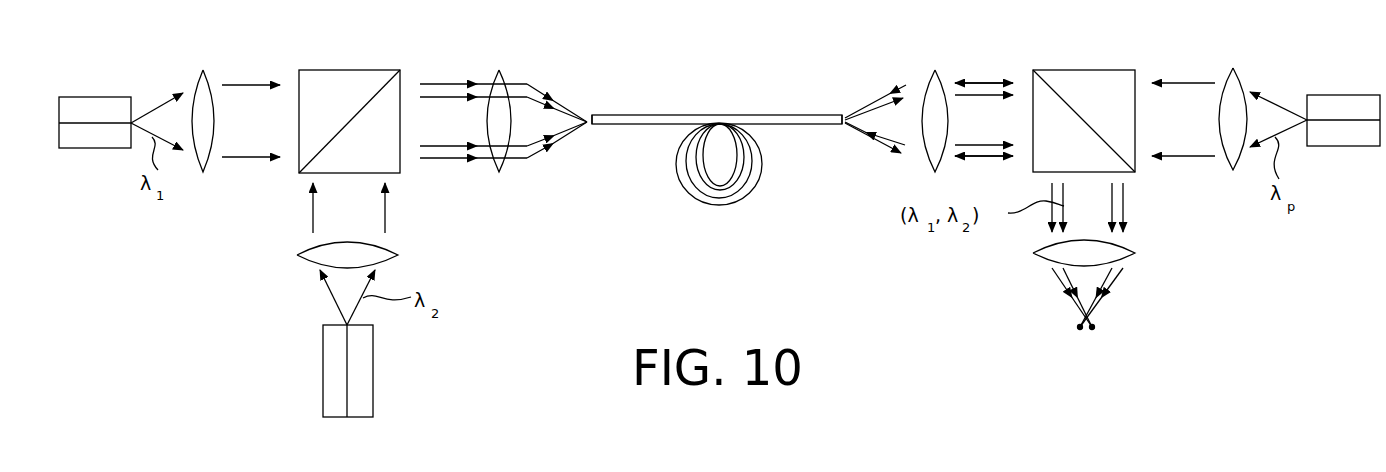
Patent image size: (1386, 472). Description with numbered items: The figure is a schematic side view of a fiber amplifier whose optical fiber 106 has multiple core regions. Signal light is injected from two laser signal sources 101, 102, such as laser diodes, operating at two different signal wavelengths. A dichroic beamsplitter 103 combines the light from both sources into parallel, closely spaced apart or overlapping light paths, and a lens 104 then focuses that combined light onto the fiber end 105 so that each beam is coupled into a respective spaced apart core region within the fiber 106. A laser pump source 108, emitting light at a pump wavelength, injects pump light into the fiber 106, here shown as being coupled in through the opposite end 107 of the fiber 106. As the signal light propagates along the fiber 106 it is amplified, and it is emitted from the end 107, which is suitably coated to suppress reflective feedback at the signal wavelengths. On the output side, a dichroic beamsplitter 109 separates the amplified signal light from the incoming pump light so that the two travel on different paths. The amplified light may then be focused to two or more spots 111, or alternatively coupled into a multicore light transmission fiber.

The laser signal source 101 is at (97, 97).
The laser signal source 102 is at (323, 368).
The dichroic beamsplitter 103 is at (345, 70).
The lens 104 is at (502, 70).
The fiber end 105 is at (598, 126).
The fiber 106 is at (668, 114).
The opposite end of the fiber 107 is at (826, 126).
The laser pump source 108 is at (1340, 95).
The dichroic beamsplitter 109 is at (1080, 70).
The spots 111 is at (1087, 329).